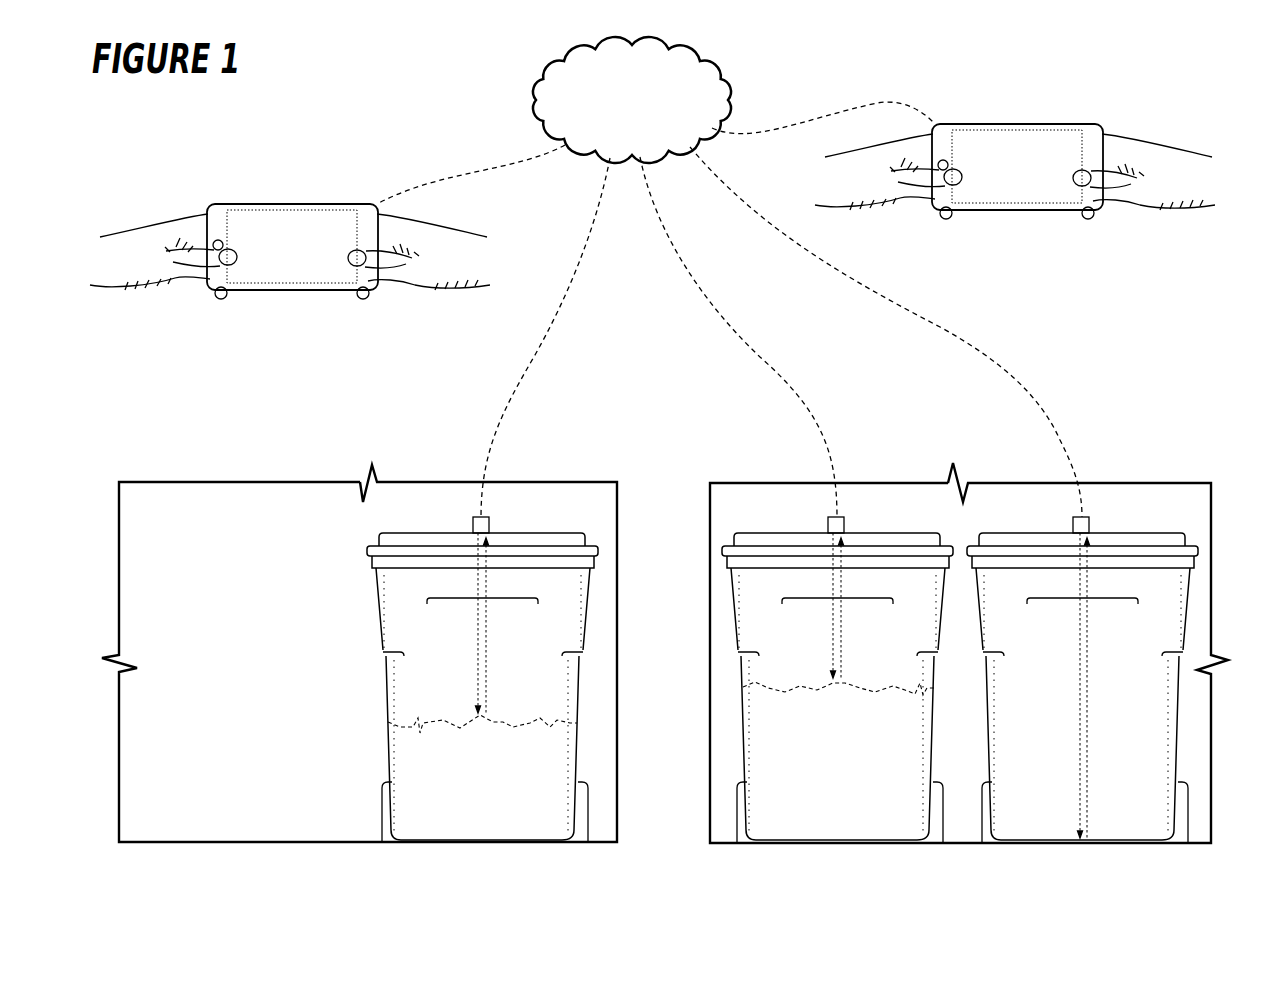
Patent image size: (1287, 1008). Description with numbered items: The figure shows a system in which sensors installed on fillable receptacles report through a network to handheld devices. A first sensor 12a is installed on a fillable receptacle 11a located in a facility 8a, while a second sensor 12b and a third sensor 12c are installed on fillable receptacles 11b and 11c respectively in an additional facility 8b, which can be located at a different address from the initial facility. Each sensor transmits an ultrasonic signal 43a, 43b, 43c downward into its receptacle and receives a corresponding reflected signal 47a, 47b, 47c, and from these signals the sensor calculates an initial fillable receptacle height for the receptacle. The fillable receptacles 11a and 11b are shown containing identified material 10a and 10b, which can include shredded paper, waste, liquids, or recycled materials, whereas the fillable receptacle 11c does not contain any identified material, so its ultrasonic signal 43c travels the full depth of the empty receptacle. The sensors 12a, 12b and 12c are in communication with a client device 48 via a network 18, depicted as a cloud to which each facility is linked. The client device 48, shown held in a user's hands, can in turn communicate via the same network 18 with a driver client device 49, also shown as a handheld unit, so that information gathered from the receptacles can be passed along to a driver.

The network 18 is at (537, 98).
The client device 48 is at (215, 205).
The driver client device 49 is at (1015, 157).
The facility 8a is at (617, 500).
The additional facility 8b is at (710, 500).
The identified material 10a is at (503, 721).
The identified material 10b is at (838, 674).
The fillable receptacle 11a is at (382, 690).
The fillable receptacle 11b is at (847, 687).
The fillable receptacle 11c is at (1074, 687).
The sensor 12a is at (490, 530).
The sensor 12b is at (857, 520).
The sensor 12c is at (1102, 520).
The ultrasonic signal 43a is at (478, 661).
The ultrasonic signal 43b is at (813, 605).
The ultrasonic signal 43c is at (1060, 685).
The reflected signal 47a is at (487, 642).
The reflected signal 47b is at (862, 608).
The reflected signal 47c is at (1107, 688).